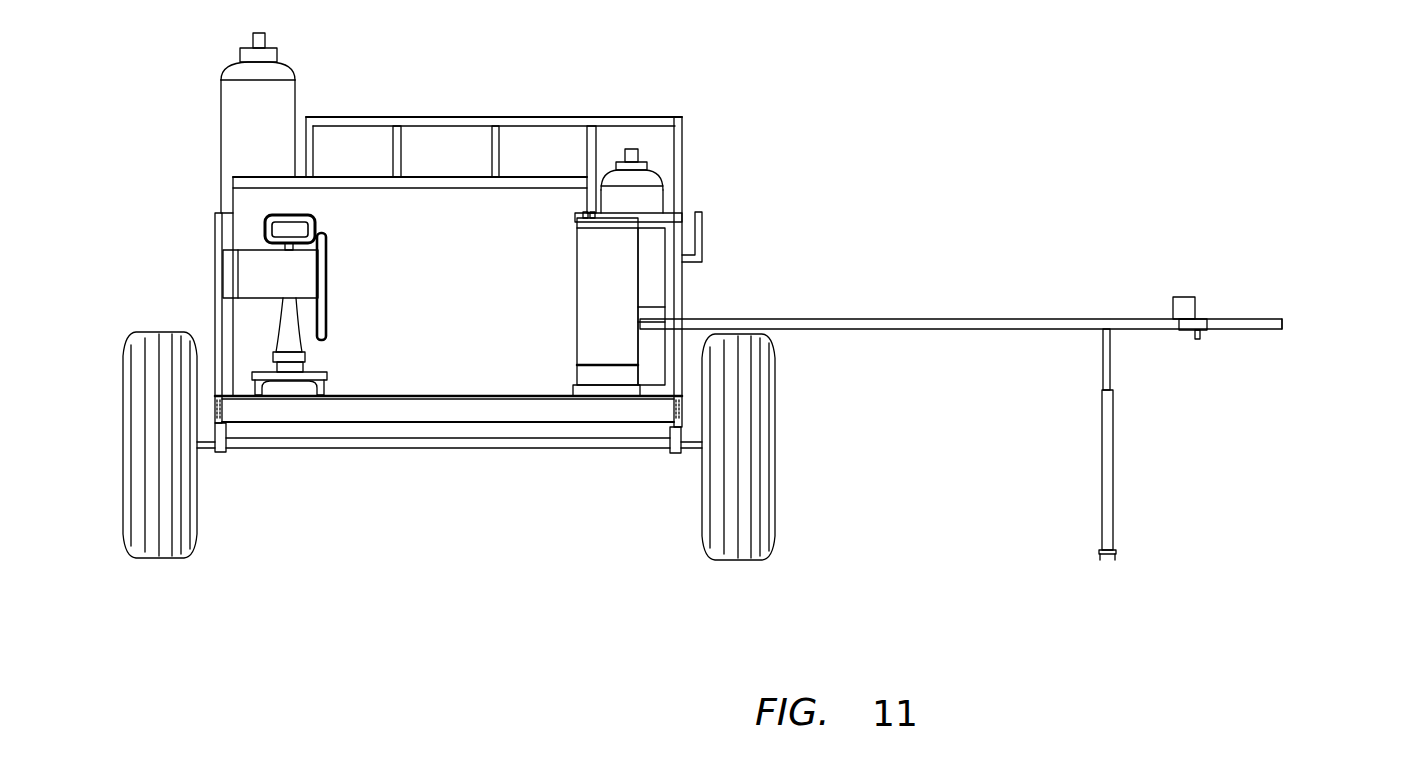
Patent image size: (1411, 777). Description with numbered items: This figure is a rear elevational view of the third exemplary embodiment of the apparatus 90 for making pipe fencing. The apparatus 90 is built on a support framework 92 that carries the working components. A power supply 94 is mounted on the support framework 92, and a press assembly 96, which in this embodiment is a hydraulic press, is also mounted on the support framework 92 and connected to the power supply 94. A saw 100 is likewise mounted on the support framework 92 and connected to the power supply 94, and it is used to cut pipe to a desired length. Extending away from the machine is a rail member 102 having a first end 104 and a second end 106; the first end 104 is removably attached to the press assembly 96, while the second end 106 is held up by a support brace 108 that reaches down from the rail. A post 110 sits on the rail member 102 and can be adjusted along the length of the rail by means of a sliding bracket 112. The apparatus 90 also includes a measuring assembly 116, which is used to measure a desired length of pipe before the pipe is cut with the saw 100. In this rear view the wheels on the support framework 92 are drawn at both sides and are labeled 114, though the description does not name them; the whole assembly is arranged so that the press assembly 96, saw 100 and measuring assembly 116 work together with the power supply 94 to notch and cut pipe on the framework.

The apparatus 90 is at (890, 70).
The support framework 92 is at (590, 425).
The power supply 94 is at (460, 243).
The press assembly 96 is at (613, 275).
The saw 100 is at (318, 292).
The rail member 102 is at (921, 319).
The first end 104 is at (645, 325).
The second end 106 is at (1282, 322).
The support brace 108 is at (1113, 476).
The post 110 is at (1187, 300).
The sliding bracket 112 is at (1188, 330).
The wheels 114 is at (128, 424).
The measuring assembly 116 is at (488, 410).